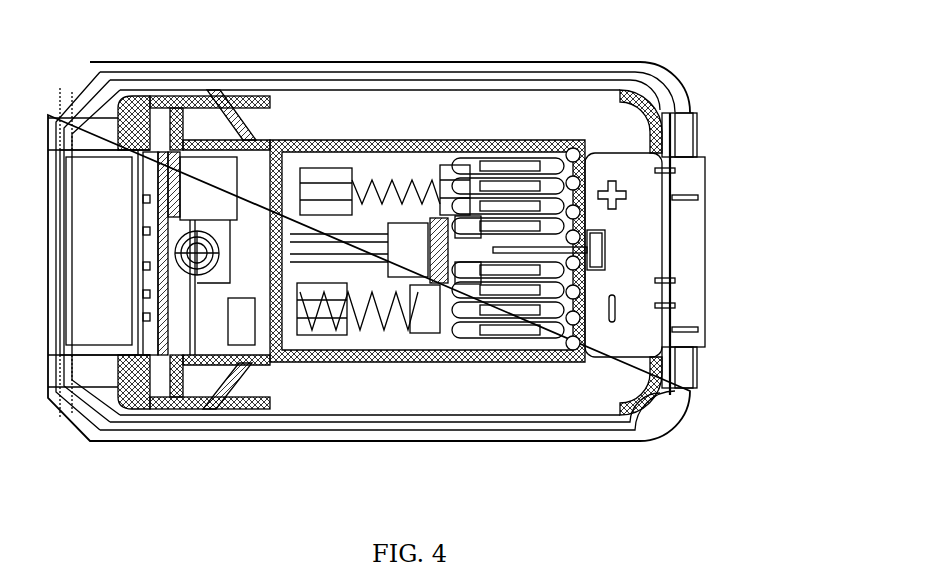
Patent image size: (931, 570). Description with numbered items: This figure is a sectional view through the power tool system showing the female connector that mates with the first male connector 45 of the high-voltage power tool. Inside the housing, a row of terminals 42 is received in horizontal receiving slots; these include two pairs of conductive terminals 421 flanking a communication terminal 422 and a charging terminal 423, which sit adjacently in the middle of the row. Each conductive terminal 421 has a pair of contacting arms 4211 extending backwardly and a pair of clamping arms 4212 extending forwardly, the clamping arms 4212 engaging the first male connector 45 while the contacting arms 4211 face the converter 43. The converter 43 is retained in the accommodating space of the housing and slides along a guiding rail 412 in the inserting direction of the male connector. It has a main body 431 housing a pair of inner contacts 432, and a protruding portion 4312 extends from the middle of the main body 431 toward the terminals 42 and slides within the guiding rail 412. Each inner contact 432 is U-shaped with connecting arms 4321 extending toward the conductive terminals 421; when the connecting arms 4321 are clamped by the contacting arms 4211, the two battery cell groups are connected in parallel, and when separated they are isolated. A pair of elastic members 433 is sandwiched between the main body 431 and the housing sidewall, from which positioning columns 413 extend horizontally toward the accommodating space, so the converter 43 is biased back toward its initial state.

The guiding rail 412 is at (314, 258).
The positioning columns 413 is at (312, 166).
The terminals 42 is at (505, 346).
The conductive terminals 421 is at (548, 346).
The contacting arms 4211 is at (486, 160).
The clamping arms 4212 is at (548, 162).
The communication terminal 422 is at (590, 287).
The charging terminal 423 is at (583, 218).
The converter 43 is at (408, 268).
The main body 431 is at (440, 170).
The protruding portion 4312 is at (556, 262).
The inner contacts 432 is at (444, 272).
The connecting arms 4321 is at (448, 218).
The elastic members 433 is at (382, 168).
The first male connector 45 is at (645, 172).